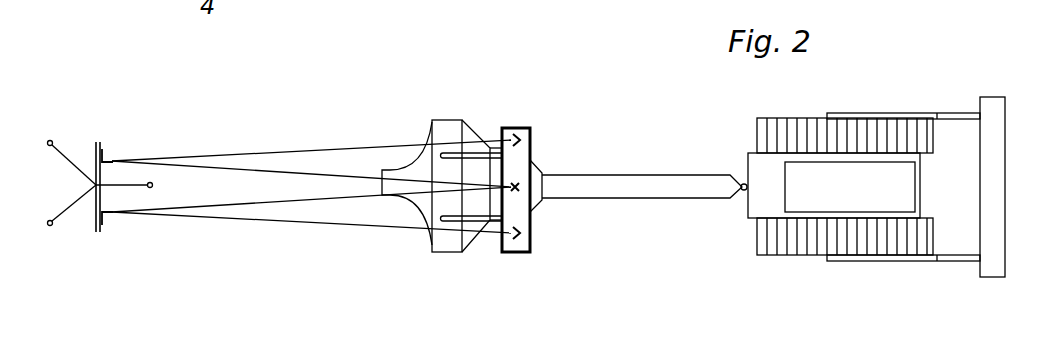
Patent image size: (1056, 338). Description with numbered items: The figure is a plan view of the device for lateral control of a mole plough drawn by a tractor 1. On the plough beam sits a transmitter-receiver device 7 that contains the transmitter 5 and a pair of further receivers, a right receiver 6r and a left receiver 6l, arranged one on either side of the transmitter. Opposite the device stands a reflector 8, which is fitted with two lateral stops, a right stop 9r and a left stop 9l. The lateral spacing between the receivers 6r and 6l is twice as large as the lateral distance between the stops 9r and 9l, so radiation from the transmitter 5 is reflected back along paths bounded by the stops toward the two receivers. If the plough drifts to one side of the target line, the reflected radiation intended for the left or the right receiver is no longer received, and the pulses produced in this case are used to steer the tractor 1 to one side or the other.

The tractor 1 is at (887, 112).
The transmitter 5 is at (518, 186).
The right receiver 6r is at (533, 138).
The left receiver 6l is at (524, 245).
The transmitter-receiver device 7 is at (502, 250).
The reflector 8 is at (95, 170).
The right lateral stop 9r is at (106, 151).
The left lateral stop 9l is at (103, 226).